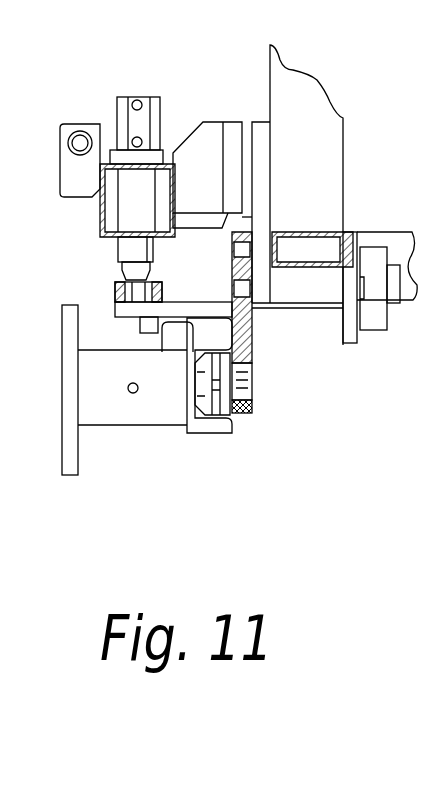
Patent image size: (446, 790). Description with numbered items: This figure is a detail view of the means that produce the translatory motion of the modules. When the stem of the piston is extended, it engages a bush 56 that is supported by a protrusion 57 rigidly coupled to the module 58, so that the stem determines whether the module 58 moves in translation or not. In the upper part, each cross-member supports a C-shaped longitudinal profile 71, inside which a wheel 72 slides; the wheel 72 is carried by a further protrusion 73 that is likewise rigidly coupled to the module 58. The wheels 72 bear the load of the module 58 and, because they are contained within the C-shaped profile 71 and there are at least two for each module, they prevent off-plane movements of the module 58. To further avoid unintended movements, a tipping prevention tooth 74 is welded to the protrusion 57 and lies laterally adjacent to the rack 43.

The bush 56 is at (115, 292).
The protrusion 57 is at (190, 300).
The module 58 is at (297, 287).
The C-shaped longitudinal profile 71 is at (213, 440).
The wheel 72 is at (247, 402).
The protrusion 73 is at (247, 357).
The tipping prevention tooth 74 is at (145, 322).
The rack 43 is at (177, 343).